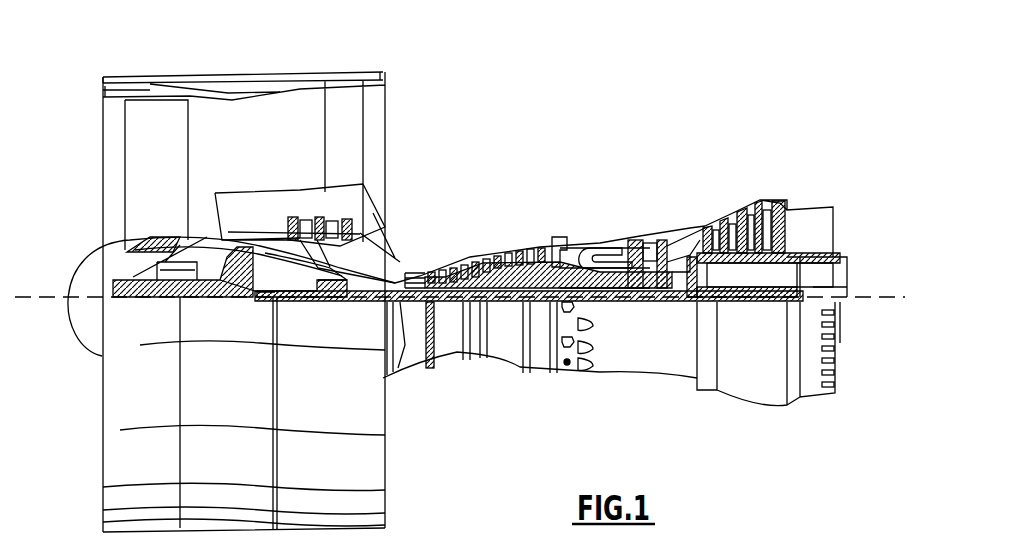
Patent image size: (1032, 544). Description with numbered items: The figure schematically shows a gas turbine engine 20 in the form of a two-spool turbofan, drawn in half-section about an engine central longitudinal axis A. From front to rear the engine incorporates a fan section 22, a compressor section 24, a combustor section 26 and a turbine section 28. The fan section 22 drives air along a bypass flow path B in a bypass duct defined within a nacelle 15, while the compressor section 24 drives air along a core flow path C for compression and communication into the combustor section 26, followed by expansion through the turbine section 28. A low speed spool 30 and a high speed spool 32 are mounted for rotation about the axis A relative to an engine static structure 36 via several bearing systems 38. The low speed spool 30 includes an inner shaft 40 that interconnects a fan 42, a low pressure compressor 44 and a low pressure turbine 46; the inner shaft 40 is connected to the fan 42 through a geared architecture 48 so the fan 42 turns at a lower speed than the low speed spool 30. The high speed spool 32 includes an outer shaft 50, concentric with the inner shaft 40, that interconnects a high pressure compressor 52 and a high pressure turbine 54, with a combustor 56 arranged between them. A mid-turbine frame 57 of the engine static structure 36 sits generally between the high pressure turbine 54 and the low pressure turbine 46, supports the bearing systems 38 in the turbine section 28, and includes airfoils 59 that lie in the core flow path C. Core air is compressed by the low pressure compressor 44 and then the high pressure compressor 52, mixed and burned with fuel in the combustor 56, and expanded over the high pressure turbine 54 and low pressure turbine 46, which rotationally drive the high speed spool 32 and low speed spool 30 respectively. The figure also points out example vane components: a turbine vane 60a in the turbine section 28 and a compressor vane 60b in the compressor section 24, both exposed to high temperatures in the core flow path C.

The nacelle 15 is at (239, 78).
The gas turbine engine 20 is at (600, 118).
The fan section 22 is at (189, 77).
The compressor section 24 is at (420, 223).
The combustor section 26 is at (597, 216).
The turbine section 28 is at (711, 193).
The low speed spool 30 is at (508, 302).
The high speed spool 32 is at (549, 252).
The engine static structure 36 is at (539, 370).
The bearing systems 38 is at (353, 305).
The inner shaft 40 is at (398, 368).
The fan 42 is at (173, 181).
The low pressure compressor 44 is at (328, 226).
The low pressure turbine 46 is at (747, 222).
The geared architecture 48 is at (248, 303).
The outer shaft 50 is at (605, 303).
The high pressure compressor 52 is at (482, 258).
The high pressure turbine 54 is at (651, 237).
The combustor 56 is at (597, 258).
The mid-turbine frame 57 is at (681, 230).
The airfoils 59 is at (690, 262).
The turbine vane 60a is at (706, 228).
The compressor vane 60b is at (535, 242).
The engine central longitudinal axis A is at (907, 297).
The bypass flow path B is at (215, 137).
The core flow path C is at (251, 223).